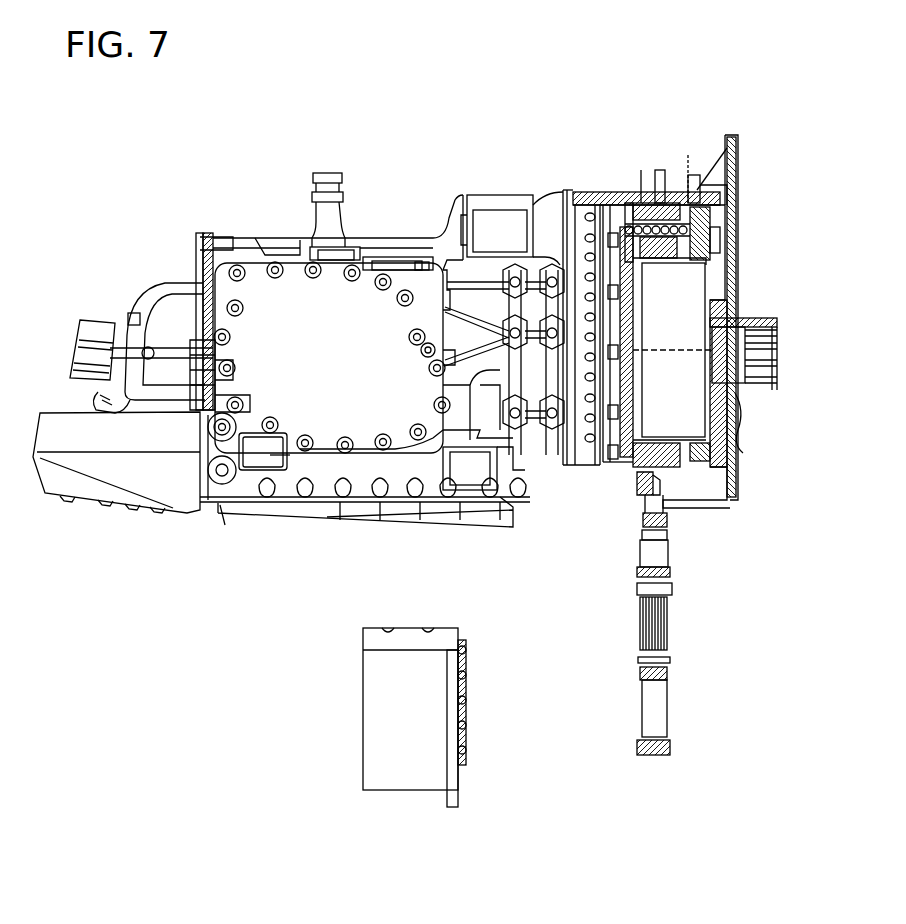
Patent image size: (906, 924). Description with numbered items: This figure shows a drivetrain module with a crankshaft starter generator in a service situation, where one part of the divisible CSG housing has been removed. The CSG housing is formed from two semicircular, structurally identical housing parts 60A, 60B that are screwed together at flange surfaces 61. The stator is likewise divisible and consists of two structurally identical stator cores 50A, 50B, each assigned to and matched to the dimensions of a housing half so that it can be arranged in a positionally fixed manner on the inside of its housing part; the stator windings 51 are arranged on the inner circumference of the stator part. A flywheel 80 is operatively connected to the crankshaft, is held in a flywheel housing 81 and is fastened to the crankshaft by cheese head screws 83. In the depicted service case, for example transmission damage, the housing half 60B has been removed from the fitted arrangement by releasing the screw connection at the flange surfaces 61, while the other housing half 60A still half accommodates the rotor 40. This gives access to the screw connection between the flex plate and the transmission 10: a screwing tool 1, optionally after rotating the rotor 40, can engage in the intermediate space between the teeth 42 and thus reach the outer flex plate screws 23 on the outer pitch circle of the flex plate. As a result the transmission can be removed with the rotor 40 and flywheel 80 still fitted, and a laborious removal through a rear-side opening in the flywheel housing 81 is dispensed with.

The screwing tool 1 is at (650, 693).
The transmission 10 is at (483, 200).
The flex plate screws 23 is at (625, 470).
The rotor 40 is at (641, 192).
The teeth 42 is at (653, 447).
The stator core 50A is at (662, 190).
The stator core 50B is at (468, 773).
The stator windings 51 is at (688, 170).
The housing part 60A is at (592, 200).
The housing part 60B is at (342, 712).
The flange surfaces 61 is at (660, 190).
The flywheel 80 is at (700, 188).
The flywheel housing 81 is at (728, 140).
The cheese head screws 83 is at (762, 383).